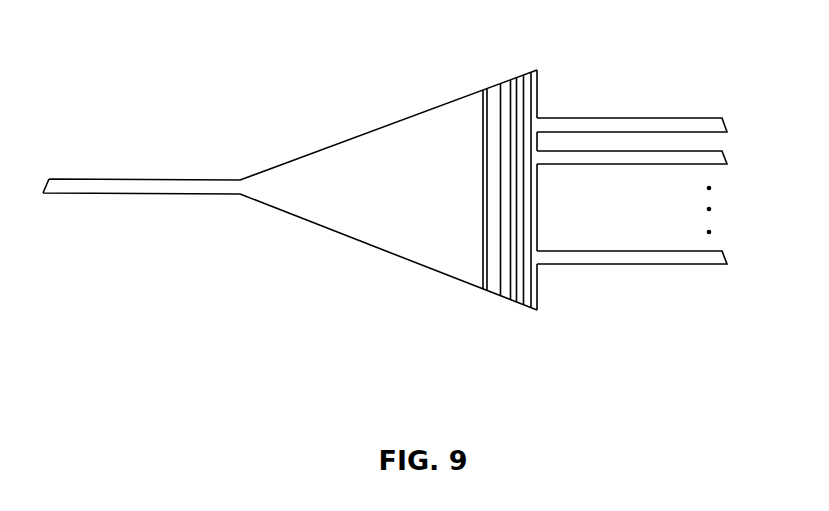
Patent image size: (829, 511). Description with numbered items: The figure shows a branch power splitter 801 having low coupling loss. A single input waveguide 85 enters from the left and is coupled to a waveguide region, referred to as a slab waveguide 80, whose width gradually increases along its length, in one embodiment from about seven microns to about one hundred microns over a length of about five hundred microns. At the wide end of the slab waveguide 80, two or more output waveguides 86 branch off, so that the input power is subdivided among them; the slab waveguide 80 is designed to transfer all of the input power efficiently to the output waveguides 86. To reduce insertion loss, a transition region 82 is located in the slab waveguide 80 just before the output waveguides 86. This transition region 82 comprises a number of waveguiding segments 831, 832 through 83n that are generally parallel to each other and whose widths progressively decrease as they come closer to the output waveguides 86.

The slab waveguide 80 is at (373, 192).
The power splitter 801 is at (350, 113).
The transition region 82 is at (499, 202).
The waveguiding segment 831 is at (492, 294).
The waveguiding segment 832 is at (507, 300).
The waveguiding segment 83n is at (518, 308).
The input waveguide 85 is at (145, 179).
The output waveguides 86 is at (732, 113).